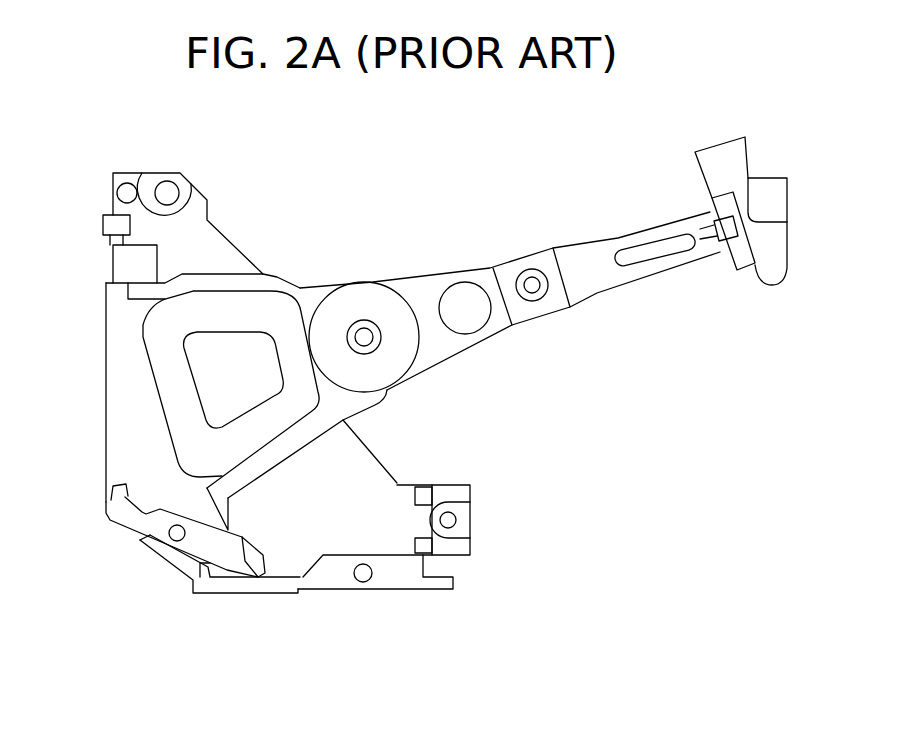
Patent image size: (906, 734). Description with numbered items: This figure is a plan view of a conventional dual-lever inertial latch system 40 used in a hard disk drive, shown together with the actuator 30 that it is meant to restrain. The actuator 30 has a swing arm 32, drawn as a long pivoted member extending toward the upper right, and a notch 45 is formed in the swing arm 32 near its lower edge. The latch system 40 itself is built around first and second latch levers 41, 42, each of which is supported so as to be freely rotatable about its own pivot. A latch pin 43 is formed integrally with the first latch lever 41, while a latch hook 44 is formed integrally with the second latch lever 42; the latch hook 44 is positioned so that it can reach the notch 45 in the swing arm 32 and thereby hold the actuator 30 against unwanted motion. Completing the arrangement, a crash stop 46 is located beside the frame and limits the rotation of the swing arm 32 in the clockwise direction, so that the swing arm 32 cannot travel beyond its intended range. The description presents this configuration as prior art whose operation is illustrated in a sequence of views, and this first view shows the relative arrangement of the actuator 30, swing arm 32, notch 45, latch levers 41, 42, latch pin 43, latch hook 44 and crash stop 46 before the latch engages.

The actuator 30 is at (543, 278).
The swing arm 32 is at (458, 348).
The dual-lever inertial latch system 40 is at (269, 587).
The first latch lever 41 is at (403, 588).
The second latch lever 42 is at (125, 507).
The latch pin 43 is at (197, 582).
The latch hook 44 is at (247, 541).
The notch 45 is at (233, 498).
The crash stop 46 is at (122, 261).